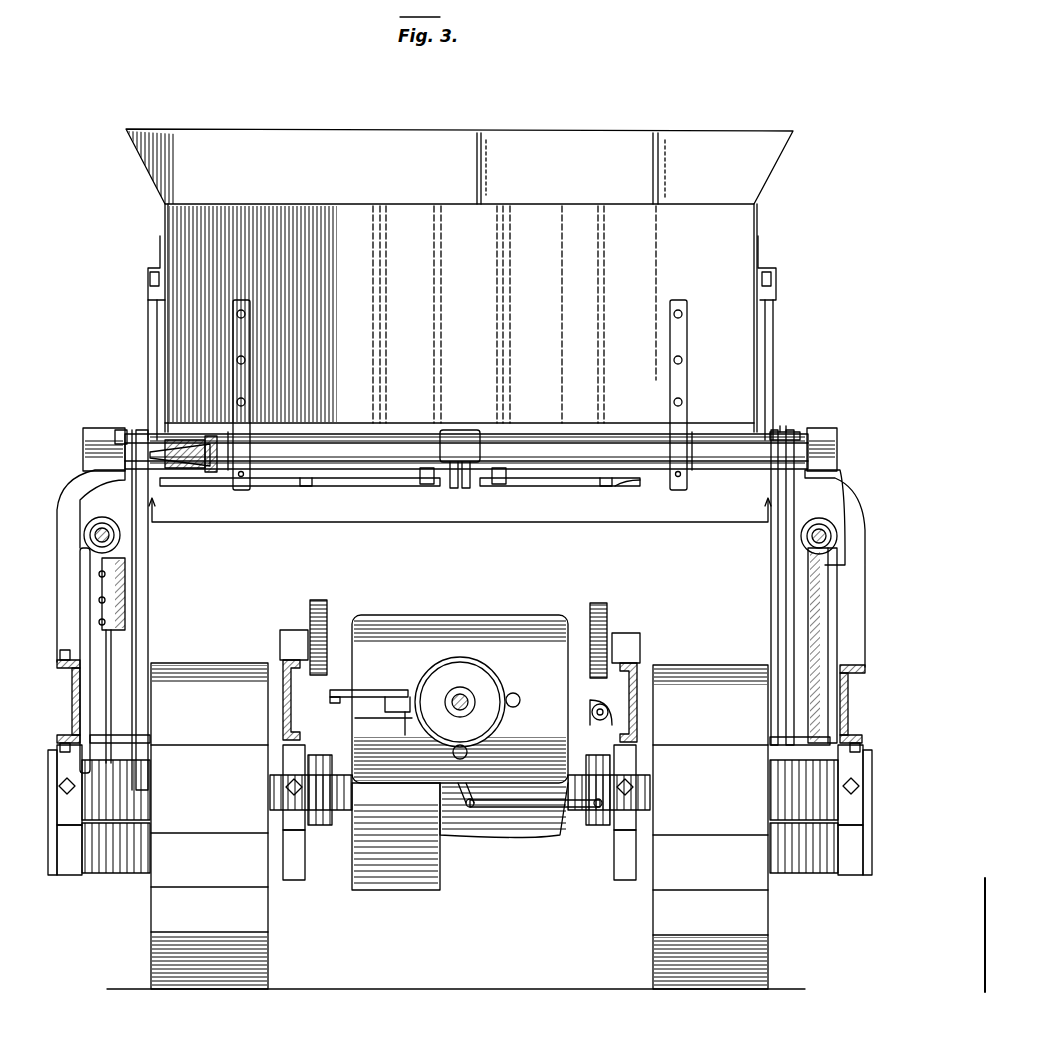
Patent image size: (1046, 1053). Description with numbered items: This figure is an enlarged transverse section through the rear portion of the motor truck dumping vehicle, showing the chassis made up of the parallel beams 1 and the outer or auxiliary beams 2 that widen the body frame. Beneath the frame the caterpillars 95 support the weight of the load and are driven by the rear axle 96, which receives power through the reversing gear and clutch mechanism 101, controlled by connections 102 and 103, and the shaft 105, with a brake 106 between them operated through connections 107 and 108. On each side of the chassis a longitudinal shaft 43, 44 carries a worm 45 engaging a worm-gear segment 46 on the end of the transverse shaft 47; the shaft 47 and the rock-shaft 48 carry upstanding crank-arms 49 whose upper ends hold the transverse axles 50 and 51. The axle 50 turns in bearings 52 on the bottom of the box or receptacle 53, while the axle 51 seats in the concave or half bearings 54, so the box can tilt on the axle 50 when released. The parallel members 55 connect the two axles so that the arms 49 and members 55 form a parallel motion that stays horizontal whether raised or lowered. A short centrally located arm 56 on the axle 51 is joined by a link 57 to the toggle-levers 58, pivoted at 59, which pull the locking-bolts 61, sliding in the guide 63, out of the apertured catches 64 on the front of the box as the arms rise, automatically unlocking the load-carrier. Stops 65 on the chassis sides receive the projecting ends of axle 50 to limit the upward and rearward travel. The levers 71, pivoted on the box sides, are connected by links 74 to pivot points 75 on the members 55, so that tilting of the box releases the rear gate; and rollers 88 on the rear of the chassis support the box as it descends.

The parallel beams 1 is at (283, 664).
The outer or auxiliary beams 2 is at (72, 698).
The longitudinal shaft 43 is at (110, 535).
The longitudinal shaft 44 is at (810, 538).
The worms 45 is at (98, 518).
The worm-gear segments 46 is at (118, 560).
The transverse shaft 47 is at (126, 740).
The rock-shaft 48 is at (820, 765).
The crank-arms 49 is at (148, 552).
The transverse axle 50 is at (120, 430).
The transverse axle 51 is at (560, 440).
The bearings 52 is at (188, 470).
The box or receptacle 53 is at (738, 214).
The concave or half bearings 54 is at (784, 438).
The parallel members 55 is at (212, 472).
The short centrally located arm 56 is at (472, 480).
The link 57 is at (456, 480).
The toggle-levers 58 is at (396, 484).
The pivot 59 is at (314, 487).
The locking-bolts 61 is at (244, 473).
The guide 63 is at (252, 480).
The apertured catches 64 is at (246, 442).
The stops 65 is at (88, 442).
The levers 71 is at (148, 282).
The links 74 is at (148, 366).
The pivot points 75 is at (152, 458).
The rollers 88 is at (318, 614).
The caterpillars 95 is at (165, 948).
The rear axle 96 is at (330, 810).
The reversing gear and clutch mechanism 101 is at (482, 622).
The connection 102 is at (534, 810).
The connection 103 is at (594, 708).
The shaft 105 is at (468, 700).
The brake 106 is at (448, 660).
The connection 107 is at (378, 690).
The connection 108 is at (332, 700).